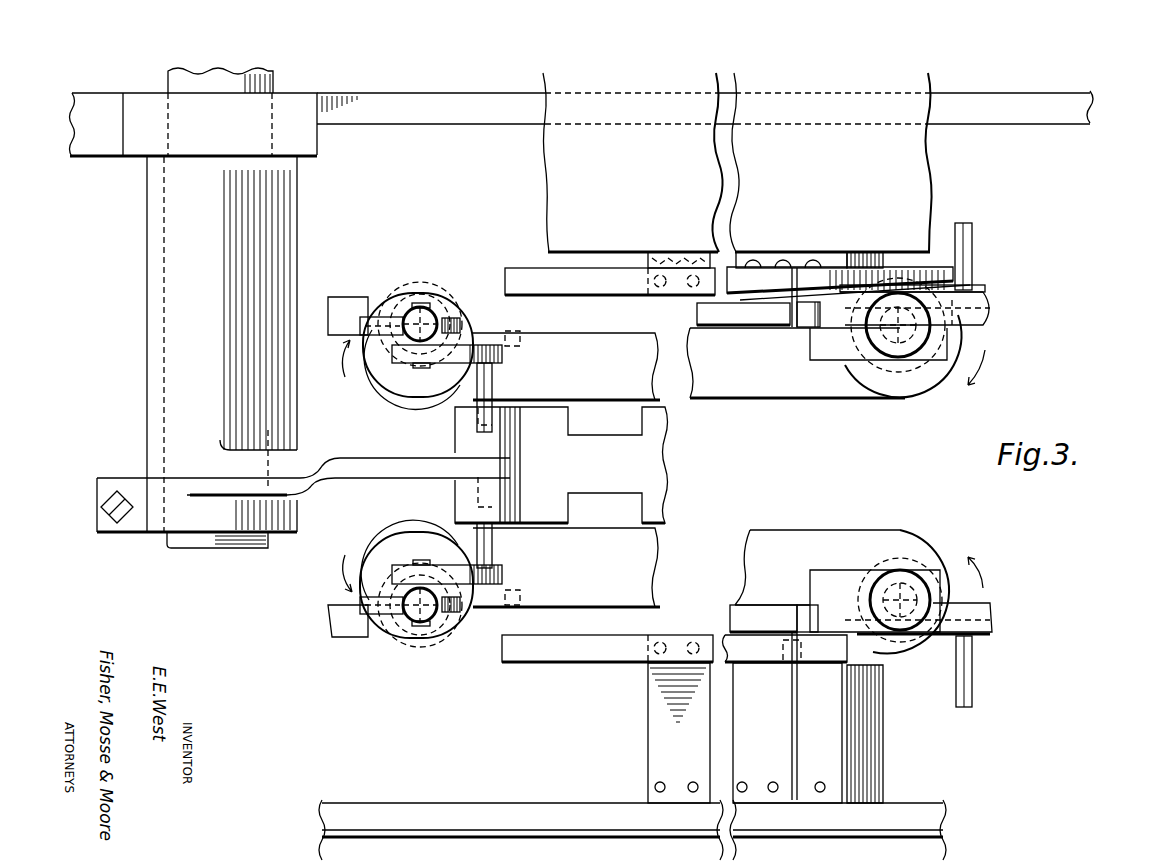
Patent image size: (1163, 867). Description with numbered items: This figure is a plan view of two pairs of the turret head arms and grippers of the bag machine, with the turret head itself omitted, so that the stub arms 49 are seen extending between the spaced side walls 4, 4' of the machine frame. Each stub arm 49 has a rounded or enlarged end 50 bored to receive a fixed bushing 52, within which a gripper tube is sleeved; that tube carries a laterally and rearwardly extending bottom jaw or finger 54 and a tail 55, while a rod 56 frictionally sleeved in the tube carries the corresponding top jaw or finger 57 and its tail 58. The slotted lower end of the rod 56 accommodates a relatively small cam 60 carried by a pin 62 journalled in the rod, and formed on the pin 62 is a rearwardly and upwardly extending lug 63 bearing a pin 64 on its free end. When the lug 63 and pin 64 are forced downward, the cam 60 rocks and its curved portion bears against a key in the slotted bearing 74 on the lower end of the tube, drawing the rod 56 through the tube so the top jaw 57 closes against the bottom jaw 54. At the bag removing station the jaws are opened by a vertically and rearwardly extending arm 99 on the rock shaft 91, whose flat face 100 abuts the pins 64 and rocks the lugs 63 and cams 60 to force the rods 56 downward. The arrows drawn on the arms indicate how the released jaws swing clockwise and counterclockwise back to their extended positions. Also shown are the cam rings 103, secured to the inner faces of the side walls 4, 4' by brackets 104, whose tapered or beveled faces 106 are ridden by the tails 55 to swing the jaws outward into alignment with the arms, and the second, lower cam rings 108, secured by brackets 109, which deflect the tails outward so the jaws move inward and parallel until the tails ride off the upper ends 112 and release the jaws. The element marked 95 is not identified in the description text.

The side wall 4 is at (705, 124).
The side wall 4' is at (632, 818).
The stub arm 49 is at (745, 398).
The rounded or enlarged end 50 is at (370, 378).
The bushing 52 is at (985, 352).
The jaw or finger 54 is at (520, 343).
The tail 55 is at (340, 297).
The rod 56 is at (445, 305).
The jaw or finger 57 is at (993, 312).
The tail 58 is at (835, 358).
The cam 60 is at (378, 317).
The pin 62 is at (420, 303).
The lug 63 is at (445, 364).
The pin 64 is at (492, 380).
The bearing 74 is at (380, 345).
The rock shaft 91 is at (210, 548).
The base 95 is at (145, 530).
The arm 99 is at (340, 458).
The flat face 100 is at (520, 432).
The cam ring 103 is at (518, 675).
The bracket 104 is at (680, 243).
The tapered or beveled face 106 is at (870, 268).
The cam ring 108 is at (697, 312).
The bracket 109 is at (790, 315).
The upper end 112 is at (805, 330).